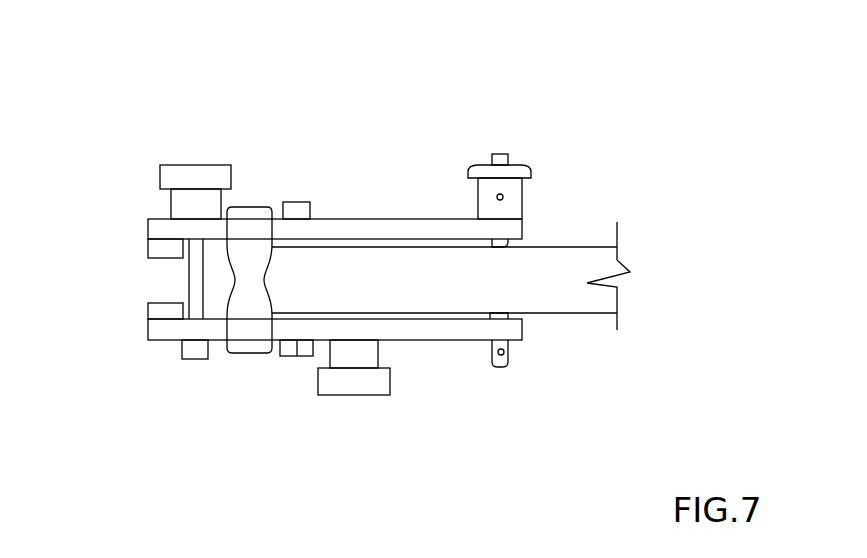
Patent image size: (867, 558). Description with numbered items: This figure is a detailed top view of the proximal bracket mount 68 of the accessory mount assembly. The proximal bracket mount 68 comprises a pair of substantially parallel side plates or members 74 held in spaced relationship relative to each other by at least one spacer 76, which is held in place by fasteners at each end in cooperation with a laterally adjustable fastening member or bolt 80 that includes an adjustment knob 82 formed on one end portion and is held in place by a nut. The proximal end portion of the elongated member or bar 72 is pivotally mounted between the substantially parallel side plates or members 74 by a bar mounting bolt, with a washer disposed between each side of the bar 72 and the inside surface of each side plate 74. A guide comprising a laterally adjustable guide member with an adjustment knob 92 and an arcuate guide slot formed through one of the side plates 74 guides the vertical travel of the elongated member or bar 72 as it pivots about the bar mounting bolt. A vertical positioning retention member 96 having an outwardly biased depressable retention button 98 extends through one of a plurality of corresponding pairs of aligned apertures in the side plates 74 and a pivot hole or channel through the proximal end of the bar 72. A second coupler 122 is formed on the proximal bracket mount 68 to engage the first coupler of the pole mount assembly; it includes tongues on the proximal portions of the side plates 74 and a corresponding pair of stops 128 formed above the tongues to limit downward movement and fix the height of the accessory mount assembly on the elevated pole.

The proximal bracket mount 68 is at (381, 157).
The elongated member or bar 72 is at (568, 281).
The substantially parallel side plates or members 74 is at (412, 233).
The spacer 76 is at (245, 293).
The laterally adjustable fastening member or bolt 80 is at (193, 285).
The adjustment knob 82 is at (182, 170).
The adjustment knob 92 is at (355, 380).
The vertical positioning retention member 96 is at (505, 248).
The outwardly biased depressable retention button 98 is at (503, 354).
The second coupler 122 is at (155, 402).
The stops 128 is at (145, 255).